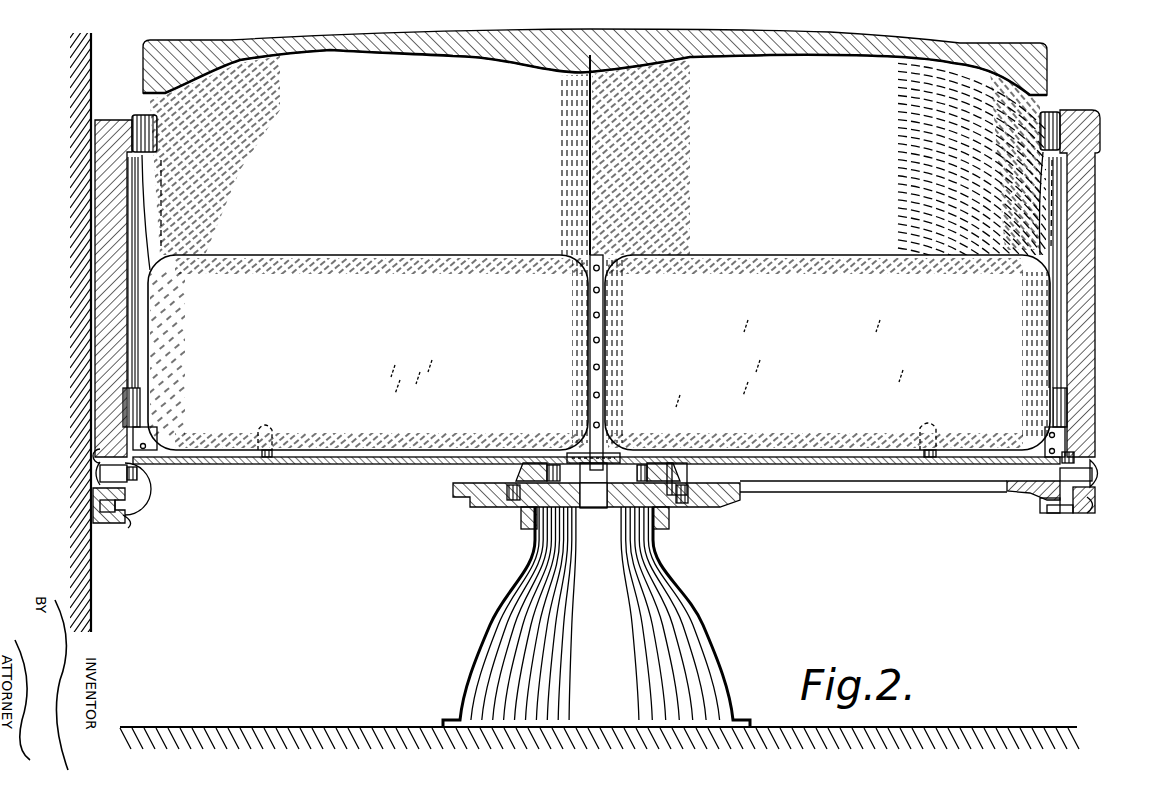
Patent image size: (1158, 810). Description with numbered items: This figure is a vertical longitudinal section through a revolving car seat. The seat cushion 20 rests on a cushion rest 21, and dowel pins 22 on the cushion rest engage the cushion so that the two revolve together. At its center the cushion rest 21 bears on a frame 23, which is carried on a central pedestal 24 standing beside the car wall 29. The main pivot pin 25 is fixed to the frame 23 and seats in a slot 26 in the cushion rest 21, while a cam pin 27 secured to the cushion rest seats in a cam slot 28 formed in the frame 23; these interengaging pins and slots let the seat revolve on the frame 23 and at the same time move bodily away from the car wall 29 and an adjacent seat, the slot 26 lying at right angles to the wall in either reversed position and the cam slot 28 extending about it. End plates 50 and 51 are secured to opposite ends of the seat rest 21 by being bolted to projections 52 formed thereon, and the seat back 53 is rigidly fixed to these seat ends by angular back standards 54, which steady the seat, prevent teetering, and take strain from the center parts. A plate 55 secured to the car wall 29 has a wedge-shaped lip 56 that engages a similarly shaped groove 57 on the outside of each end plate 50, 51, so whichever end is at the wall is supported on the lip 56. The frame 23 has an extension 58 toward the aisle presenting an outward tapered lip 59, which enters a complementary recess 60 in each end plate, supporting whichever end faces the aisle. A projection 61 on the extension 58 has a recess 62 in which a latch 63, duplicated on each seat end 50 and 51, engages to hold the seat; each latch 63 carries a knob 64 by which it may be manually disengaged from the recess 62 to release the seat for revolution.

The seat cushion 20 is at (853, 257).
The cushion rest 21 is at (728, 463).
The dowel pins 22 is at (280, 462).
The frame 23 is at (470, 497).
The central pedestal 24 is at (487, 625).
The main pivot pin 25 is at (607, 480).
The slot 26 is at (562, 473).
The cam pin 27 is at (693, 460).
The cam slot 28 is at (515, 503).
The car wall 29 is at (210, 572).
The end plate 50 is at (1087, 332).
The end plate 51 is at (100, 285).
The projections 52 is at (140, 445).
The seat back 53 is at (1020, 100).
The angular back standards 54 is at (138, 388).
The plate 55 is at (93, 517).
The wedge-shaped projection or lip 56 is at (107, 518).
The groove or recess 57 is at (127, 514).
The extension 58 is at (953, 492).
The tapered lip or projection 59 is at (1073, 505).
The recess 60 is at (128, 503).
The projection 61 is at (1040, 500).
The recess or aperture 62 is at (1023, 493).
The latch 63 is at (147, 478).
The knob 64 is at (100, 473).